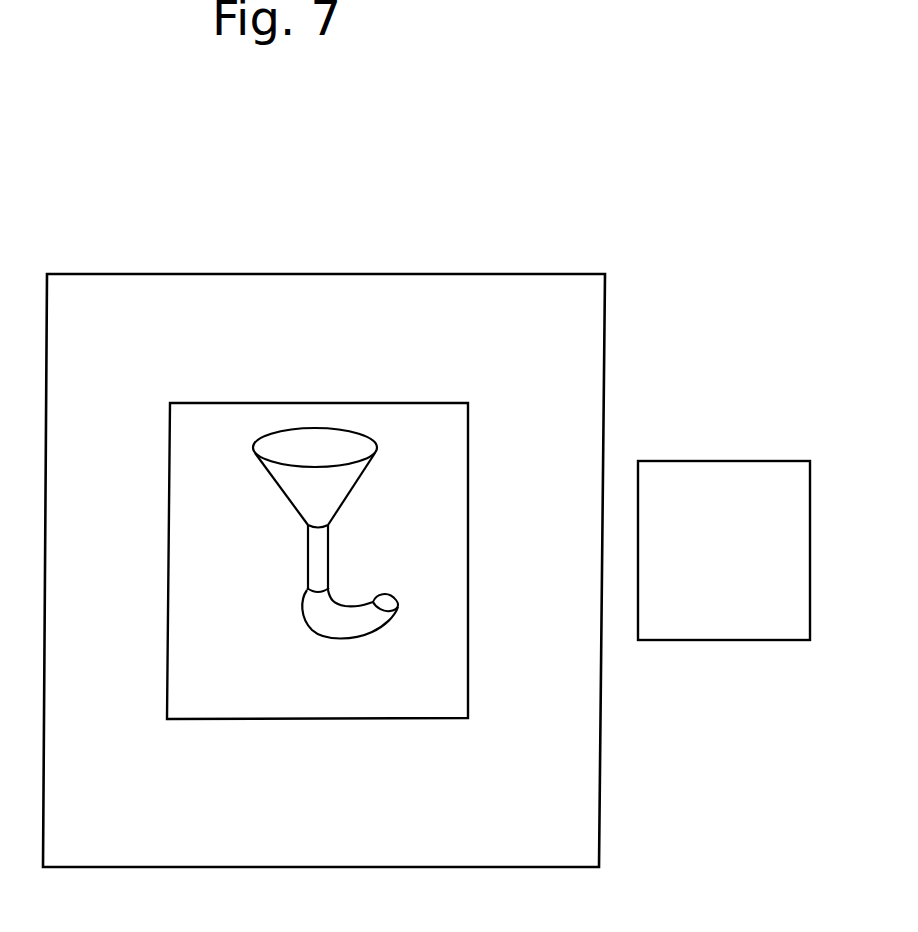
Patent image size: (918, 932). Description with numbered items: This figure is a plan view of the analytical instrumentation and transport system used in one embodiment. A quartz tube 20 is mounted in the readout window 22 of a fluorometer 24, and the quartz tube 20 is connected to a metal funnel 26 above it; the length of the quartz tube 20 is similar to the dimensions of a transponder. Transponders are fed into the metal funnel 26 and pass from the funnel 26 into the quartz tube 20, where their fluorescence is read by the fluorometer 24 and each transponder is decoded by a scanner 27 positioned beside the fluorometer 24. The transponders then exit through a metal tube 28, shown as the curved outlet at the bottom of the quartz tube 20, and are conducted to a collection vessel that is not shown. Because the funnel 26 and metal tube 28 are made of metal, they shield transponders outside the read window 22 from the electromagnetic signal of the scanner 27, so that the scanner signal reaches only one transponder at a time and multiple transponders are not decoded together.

The quartz tube 20 is at (285, 558).
The readout window 22 is at (362, 731).
The fluorometer 24 is at (624, 311).
The metal funnel 26 is at (322, 424).
The scanner 27 is at (732, 444).
The metal tube 28 is at (291, 637).